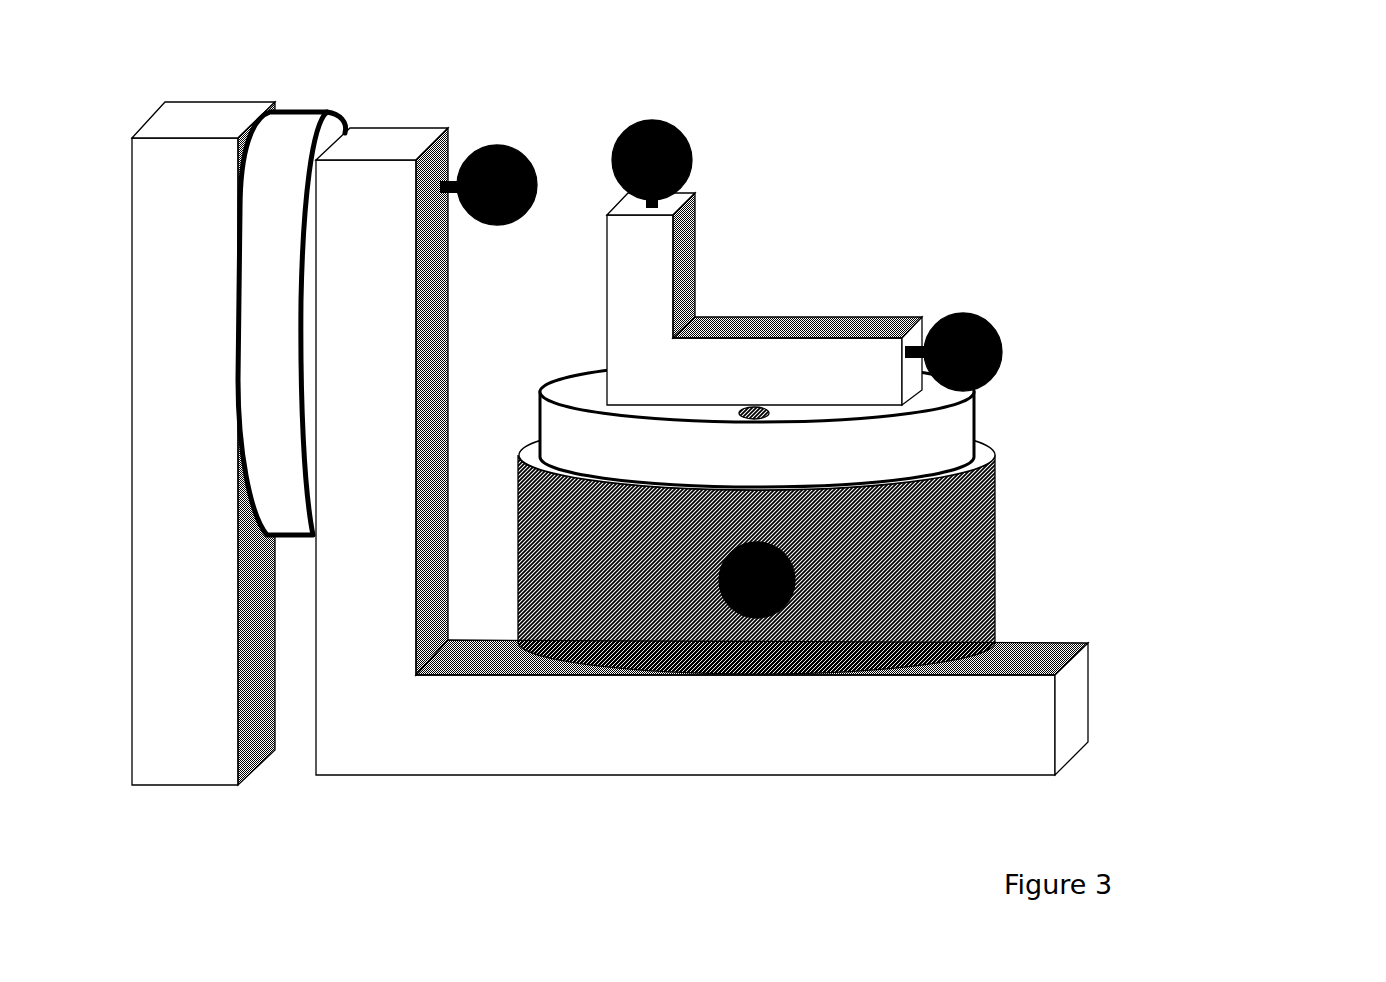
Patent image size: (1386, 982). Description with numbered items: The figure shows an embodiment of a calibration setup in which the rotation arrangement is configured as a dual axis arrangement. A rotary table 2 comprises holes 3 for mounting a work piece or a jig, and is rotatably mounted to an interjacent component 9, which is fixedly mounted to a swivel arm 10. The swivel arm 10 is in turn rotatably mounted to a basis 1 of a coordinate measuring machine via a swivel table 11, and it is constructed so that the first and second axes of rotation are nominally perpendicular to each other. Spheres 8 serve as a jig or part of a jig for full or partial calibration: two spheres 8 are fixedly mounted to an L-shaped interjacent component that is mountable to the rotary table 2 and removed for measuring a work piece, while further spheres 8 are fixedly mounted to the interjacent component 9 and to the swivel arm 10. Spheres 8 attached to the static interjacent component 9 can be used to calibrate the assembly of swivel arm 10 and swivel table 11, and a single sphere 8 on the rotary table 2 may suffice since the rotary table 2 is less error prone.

The basis 1 is at (230, 403).
The rotary table 2 is at (888, 421).
The holes 3 is at (950, 367).
The spheres 8 is at (844, 345).
The interjacent component 9 is at (889, 547).
The swivel arm 10 is at (845, 451).
The swivel table 11 is at (428, 286).